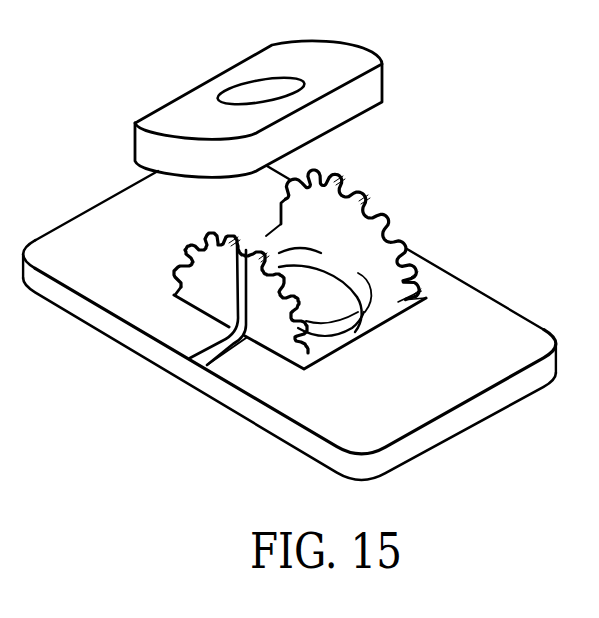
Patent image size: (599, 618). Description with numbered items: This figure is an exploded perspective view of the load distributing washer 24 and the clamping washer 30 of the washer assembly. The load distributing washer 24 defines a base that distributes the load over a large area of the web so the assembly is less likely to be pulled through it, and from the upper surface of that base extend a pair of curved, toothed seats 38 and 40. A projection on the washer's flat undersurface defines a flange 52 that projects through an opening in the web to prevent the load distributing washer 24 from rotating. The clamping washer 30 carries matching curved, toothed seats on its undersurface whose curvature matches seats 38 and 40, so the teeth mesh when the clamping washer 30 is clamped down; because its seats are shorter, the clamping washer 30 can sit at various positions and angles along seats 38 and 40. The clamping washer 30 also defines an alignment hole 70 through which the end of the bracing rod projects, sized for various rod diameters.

The load distributing washer 24 is at (473, 263).
The clamping washer 30 is at (172, 100).
The curved, toothed bearing surface or seat 38 is at (366, 187).
The curved, toothed bearing surface or seat 40 is at (204, 234).
The flange 52 is at (365, 331).
The alignment hole 70 is at (258, 85).